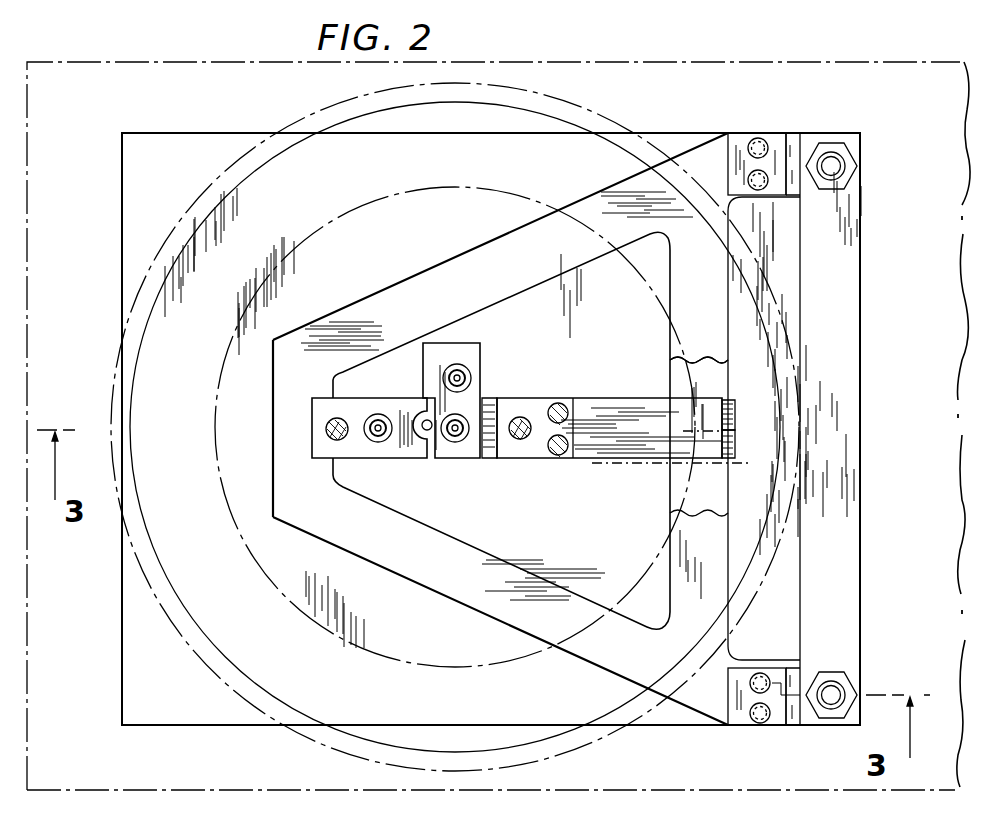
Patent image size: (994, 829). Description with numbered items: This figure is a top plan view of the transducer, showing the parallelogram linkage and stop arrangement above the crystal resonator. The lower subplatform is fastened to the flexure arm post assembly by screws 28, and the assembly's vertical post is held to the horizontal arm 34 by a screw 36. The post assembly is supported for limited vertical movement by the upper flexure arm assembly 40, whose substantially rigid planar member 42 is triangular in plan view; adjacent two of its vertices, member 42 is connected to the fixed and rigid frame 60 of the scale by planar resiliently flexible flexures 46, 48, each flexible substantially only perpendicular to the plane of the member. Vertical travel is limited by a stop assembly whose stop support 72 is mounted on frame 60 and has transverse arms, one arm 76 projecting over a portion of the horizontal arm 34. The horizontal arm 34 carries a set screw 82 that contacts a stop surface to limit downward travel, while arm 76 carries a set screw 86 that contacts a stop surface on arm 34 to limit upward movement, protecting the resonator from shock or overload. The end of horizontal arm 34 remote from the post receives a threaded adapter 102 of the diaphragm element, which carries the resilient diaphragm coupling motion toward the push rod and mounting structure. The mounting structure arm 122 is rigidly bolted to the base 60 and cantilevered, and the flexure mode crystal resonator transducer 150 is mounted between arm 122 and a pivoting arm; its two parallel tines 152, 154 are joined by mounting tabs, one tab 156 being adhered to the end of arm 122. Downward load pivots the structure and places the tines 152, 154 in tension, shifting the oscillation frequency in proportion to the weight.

The screws 28 is at (334, 443).
The horizontal arm 34 is at (504, 408).
The screw 36 is at (378, 444).
The upper flexure arm assembly 40 is at (470, 624).
The rigid planar member 42 is at (528, 590).
The flexure 46 is at (788, 137).
The flexure 48 is at (792, 726).
The frame 60 is at (861, 518).
The stop support 72 is at (478, 348).
The transverse arm 76 is at (472, 458).
The set screw 82 is at (425, 420).
The set screw 86 is at (455, 444).
The adapter 102 is at (522, 440).
The arm 122 is at (722, 465).
The flexure mode crystal resonator transducer 150 is at (742, 390).
The tine 152 is at (735, 440).
The tine 154 is at (735, 420).
The mounting tab 156 is at (700, 352).